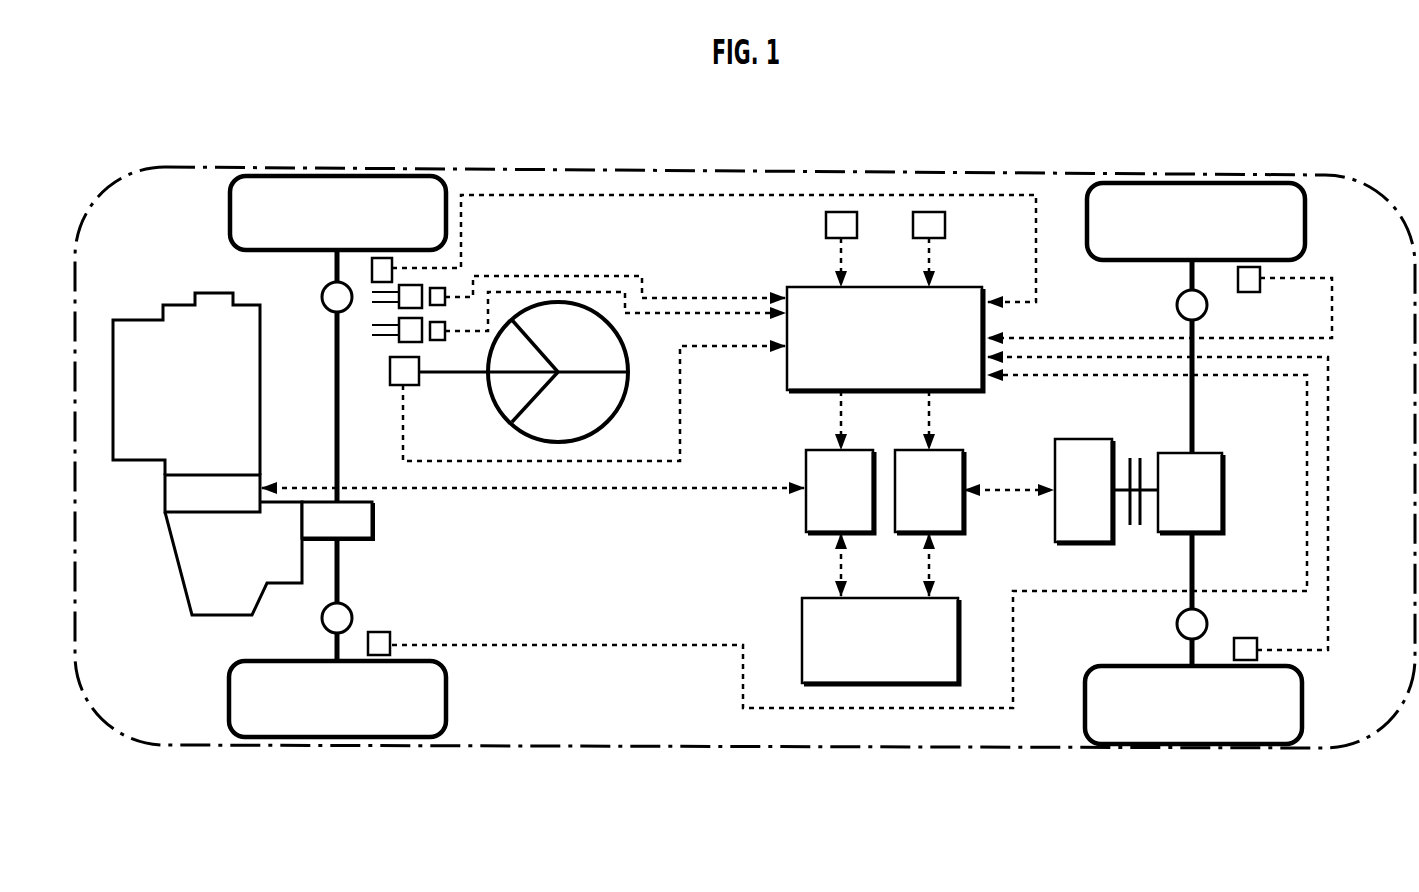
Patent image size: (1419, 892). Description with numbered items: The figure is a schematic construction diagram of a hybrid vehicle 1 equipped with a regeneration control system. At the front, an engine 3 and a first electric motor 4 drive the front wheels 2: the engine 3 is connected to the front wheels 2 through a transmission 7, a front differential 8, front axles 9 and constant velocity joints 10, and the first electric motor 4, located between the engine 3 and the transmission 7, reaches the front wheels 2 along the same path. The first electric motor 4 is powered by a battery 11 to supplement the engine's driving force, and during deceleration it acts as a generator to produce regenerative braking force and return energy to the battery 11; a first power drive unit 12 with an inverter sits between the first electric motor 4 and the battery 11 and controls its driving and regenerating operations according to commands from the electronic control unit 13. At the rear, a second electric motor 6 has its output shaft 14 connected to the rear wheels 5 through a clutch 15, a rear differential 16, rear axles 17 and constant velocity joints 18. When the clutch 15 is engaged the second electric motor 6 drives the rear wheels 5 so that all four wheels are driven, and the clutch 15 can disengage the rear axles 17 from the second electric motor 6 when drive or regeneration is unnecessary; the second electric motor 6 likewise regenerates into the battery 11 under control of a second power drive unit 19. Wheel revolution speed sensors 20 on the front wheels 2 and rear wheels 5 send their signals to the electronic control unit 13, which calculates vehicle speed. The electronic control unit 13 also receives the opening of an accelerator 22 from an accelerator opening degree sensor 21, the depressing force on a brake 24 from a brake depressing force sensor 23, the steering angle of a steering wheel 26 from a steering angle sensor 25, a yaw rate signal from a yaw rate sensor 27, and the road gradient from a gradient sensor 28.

The vehicle 1 is at (1322, 134).
The front wheels 2 is at (302, 215).
The engine 3 is at (140, 401).
The first electric motor 4 is at (170, 498).
The rear wheels 5 is at (1152, 206).
The second electric motor 6 is at (1090, 543).
The transmission 7 is at (178, 582).
The front differential 8 is at (360, 522).
The front axles 9 is at (333, 403).
The constant velocity joints 10 is at (322, 297).
The battery 11 is at (802, 618).
The first power drive unit 12 is at (806, 505).
The electronic control unit 13 is at (950, 287).
The output shaft 14 is at (1128, 458).
The clutch 15 is at (1140, 525).
The rear differential 16 is at (1222, 493).
The rear axles 17 is at (1196, 412).
The constant velocity joints 18 is at (1177, 305).
The second power drive unit 19 is at (963, 505).
The wheel revolution speed sensors 20 is at (382, 258).
The accelerator opening degree sensor 21 is at (438, 288).
The accelerator 22 is at (402, 284).
The brake depressing force sensor 23 is at (440, 340).
The brake 24 is at (402, 343).
The steering angle sensor 25 is at (400, 387).
The steering wheel 26 is at (626, 336).
The yaw rate sensor 27 is at (945, 225).
The gradient sensor 28 is at (826, 224).